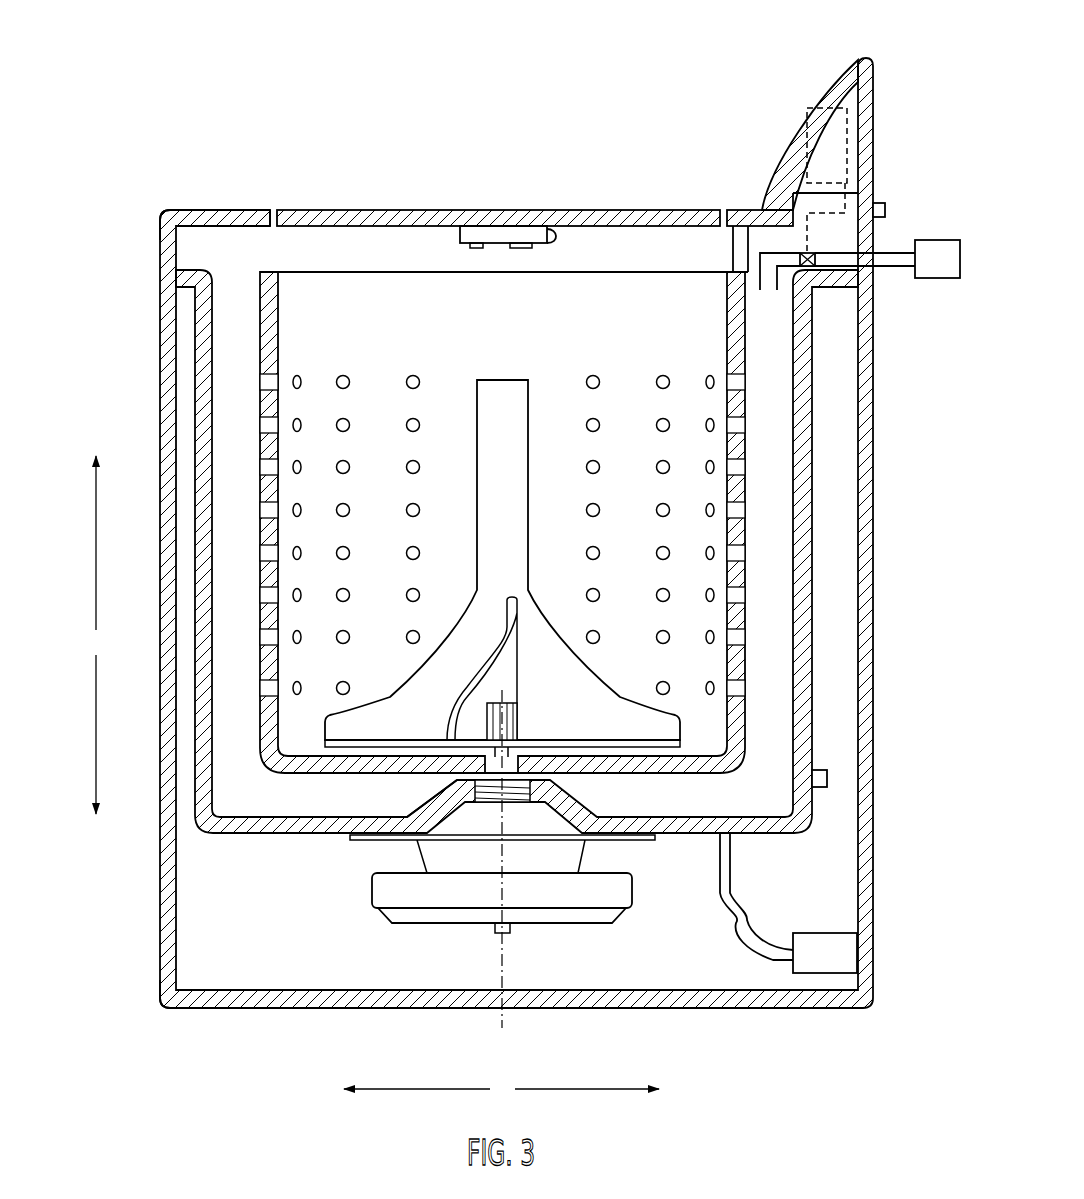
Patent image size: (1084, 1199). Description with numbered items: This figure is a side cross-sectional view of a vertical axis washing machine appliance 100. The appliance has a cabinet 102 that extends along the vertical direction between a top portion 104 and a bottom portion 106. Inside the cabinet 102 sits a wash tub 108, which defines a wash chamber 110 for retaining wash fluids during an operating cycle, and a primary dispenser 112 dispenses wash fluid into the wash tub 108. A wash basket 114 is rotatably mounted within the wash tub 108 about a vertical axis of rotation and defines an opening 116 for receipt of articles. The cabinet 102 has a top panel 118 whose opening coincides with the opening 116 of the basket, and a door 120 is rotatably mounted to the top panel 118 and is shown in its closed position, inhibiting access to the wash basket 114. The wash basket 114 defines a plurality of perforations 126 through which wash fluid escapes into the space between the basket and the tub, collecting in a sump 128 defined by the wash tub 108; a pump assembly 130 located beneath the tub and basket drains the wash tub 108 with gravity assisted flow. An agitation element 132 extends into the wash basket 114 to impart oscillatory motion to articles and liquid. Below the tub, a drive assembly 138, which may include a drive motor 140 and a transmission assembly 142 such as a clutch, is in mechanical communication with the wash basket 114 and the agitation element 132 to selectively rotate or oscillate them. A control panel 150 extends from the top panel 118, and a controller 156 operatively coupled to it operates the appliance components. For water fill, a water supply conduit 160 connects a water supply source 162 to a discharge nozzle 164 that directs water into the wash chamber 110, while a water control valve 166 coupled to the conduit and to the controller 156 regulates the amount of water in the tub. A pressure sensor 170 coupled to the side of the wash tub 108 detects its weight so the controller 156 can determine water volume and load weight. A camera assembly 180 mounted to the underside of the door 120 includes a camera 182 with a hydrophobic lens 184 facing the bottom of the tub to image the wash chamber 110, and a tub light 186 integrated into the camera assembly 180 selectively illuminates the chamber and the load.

The washing machine appliance 100 is at (200, 92).
The cabinet 102 is at (168, 350).
The top portion 104 is at (150, 220).
The bottom portion 106 is at (155, 1002).
The wash tub 108 is at (803, 672).
The wash chamber 110 is at (237, 490).
The primary dispenser 112 is at (747, 250).
The wash basket 114 is at (262, 298).
The opening 116 is at (590, 268).
The top panel 118 is at (203, 210).
The door 120 is at (390, 210).
The perforations 126 is at (424, 376).
The sump 128 is at (326, 808).
The pump assembly 130 is at (771, 985).
The agitation element 132 is at (520, 380).
The drive assembly 138 is at (454, 906).
The drive motor 140 is at (623, 897).
The transmission assembly 142 is at (567, 840).
The control panel 150 is at (806, 110).
The controller 156 is at (850, 122).
The water supply conduit 160 is at (888, 268).
The water supply source 162 is at (937, 259).
The discharge nozzle 164 is at (769, 293).
The water control valve 166 is at (815, 260).
The pressure sensor 170 is at (827, 778).
The camera assembly 180 is at (518, 214).
The camera 182 is at (557, 240).
The lens 184 is at (524, 254).
The tub light 186 is at (475, 248).